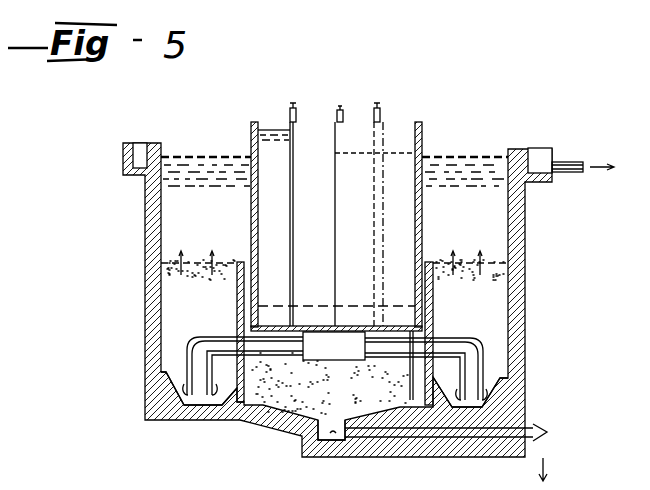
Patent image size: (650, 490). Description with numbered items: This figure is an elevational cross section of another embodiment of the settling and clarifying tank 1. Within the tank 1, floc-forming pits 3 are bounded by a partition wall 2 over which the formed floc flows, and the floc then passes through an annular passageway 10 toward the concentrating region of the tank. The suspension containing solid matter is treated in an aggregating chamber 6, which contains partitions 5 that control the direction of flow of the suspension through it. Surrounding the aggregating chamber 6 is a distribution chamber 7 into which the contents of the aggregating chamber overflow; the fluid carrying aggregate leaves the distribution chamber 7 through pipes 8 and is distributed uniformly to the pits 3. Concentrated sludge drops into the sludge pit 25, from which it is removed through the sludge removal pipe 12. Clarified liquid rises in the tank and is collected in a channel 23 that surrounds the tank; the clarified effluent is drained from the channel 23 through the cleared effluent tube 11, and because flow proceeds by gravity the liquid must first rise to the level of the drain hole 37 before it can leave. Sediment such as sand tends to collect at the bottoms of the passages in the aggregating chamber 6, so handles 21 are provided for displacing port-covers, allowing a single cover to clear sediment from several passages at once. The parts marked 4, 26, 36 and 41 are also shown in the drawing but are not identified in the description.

The tank 1 is at (518, 273).
The partition wall 2 is at (237, 311).
The floc-forming pits 3 is at (170, 378).
The annular liquid chamber 4 is at (498, 221).
The partitions 5 is at (334, 200).
The aggregating chamber 6 is at (430, 135).
The distribution chamber 7 is at (347, 359).
The pipes 8 is at (191, 338).
The annular passageway 10 is at (429, 260).
The cleared effluent tube 11 is at (568, 162).
The sludge removal pipe 12 is at (535, 433).
The handles 21 is at (293, 104).
The channel 23 is at (536, 150).
The sludge pit 25 is at (339, 444).
The cylinder wall 26 is at (256, 210).
The level line 36 is at (312, 301).
The drain hole 37 is at (168, 151).
The inner compartment 41 is at (262, 129).